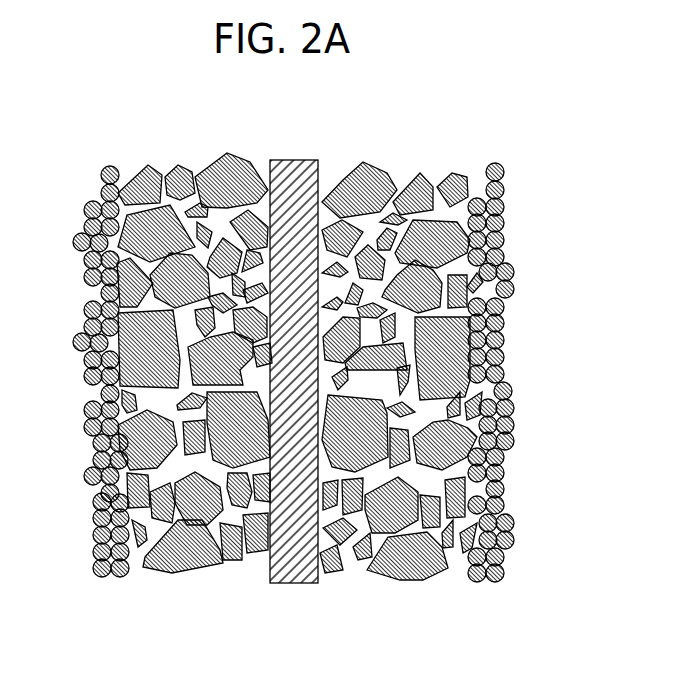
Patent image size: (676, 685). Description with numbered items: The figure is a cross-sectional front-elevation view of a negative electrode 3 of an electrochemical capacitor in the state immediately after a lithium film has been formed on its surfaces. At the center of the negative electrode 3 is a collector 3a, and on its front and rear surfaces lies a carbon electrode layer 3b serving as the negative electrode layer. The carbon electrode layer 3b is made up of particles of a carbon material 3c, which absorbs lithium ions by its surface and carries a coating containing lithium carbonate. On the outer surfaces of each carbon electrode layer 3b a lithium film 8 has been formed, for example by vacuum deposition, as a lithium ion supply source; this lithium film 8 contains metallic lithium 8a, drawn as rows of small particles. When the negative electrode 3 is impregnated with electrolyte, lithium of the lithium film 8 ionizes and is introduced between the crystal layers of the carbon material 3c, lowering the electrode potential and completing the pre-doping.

The negative electrode 3 is at (513, 138).
The collector 3a is at (295, 582).
The carbon electrode layer 3b is at (270, 147).
The carbon material 3c is at (187, 558).
The lithium film 8 is at (137, 592).
The metallic lithium 8a is at (95, 517).